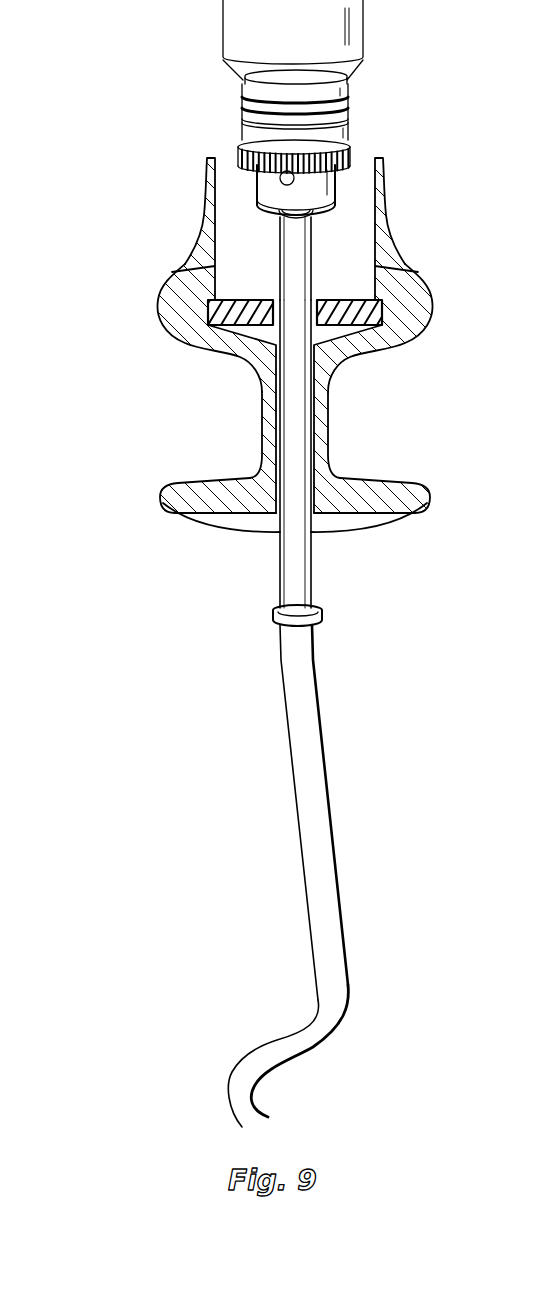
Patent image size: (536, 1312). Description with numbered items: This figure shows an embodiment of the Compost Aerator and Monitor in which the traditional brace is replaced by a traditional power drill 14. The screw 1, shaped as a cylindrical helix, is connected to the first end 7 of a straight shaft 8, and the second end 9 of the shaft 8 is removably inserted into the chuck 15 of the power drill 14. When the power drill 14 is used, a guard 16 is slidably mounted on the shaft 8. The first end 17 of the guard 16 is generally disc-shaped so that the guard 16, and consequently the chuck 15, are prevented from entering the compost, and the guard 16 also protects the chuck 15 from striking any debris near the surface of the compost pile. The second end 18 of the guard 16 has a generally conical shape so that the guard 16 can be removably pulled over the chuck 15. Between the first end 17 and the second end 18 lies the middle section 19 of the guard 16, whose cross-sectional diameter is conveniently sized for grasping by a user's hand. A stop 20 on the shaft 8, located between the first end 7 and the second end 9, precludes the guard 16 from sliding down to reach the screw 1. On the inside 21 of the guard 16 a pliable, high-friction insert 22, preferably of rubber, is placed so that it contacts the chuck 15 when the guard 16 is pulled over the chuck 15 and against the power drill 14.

The screw 1 is at (280, 1047).
The first end of the shaft 7 is at (303, 695).
The shaft 8 is at (295, 383).
The second end of the shaft 9 is at (292, 233).
The power drill 14 is at (242, 24).
The chuck 15 is at (267, 208).
The guard 16 is at (268, 365).
The first end of the guard 17 is at (250, 521).
The second end of the guard 18 is at (197, 244).
The middle section of the guard 19 is at (262, 450).
The stop 20 is at (273, 618).
The inside of the guard 21 is at (172, 270).
The high-friction insert 22 is at (200, 342).